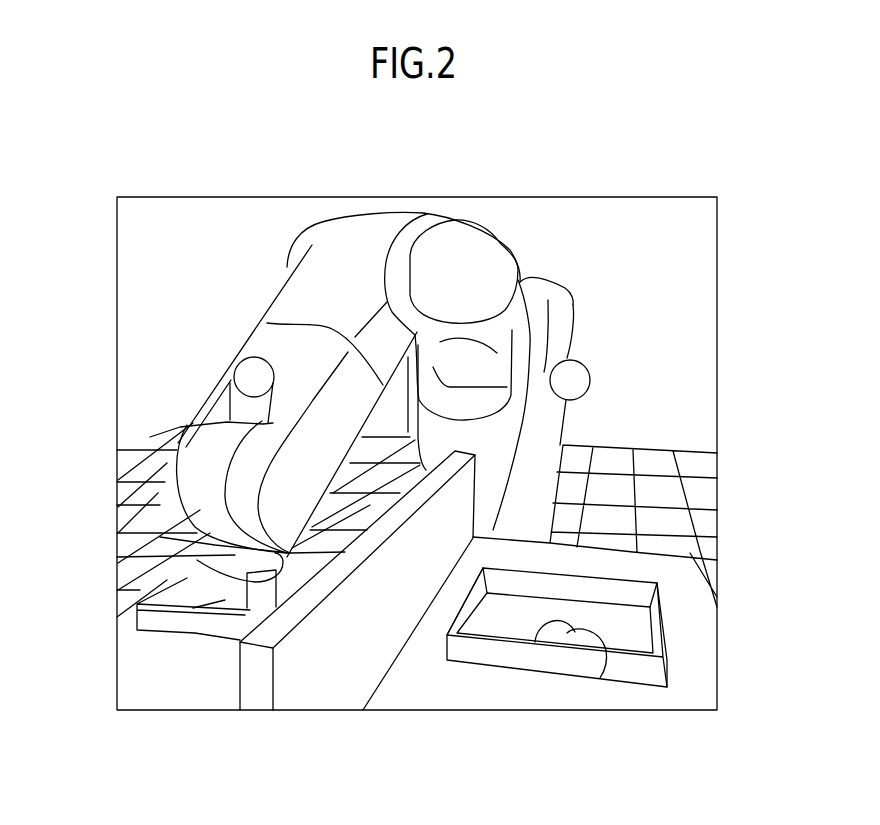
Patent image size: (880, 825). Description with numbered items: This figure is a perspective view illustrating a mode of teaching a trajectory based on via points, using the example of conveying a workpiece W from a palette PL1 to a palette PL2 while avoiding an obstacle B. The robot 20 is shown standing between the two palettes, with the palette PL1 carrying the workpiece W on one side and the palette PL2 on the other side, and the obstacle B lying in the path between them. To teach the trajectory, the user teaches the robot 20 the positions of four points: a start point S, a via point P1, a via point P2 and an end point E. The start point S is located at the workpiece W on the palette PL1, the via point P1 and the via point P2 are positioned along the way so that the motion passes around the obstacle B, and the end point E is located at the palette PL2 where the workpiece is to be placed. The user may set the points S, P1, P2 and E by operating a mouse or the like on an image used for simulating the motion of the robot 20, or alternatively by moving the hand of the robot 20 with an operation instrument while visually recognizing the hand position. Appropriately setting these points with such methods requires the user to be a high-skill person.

The robot 20 is at (535, 226).
The via point P1 is at (253, 376).
The via point P2 is at (588, 374).
The start point S is at (175, 585).
The palette PL1 is at (167, 624).
The workpiece W is at (193, 608).
The obstacle B is at (337, 663).
The palette PL2 is at (513, 667).
The end point E is at (603, 633).